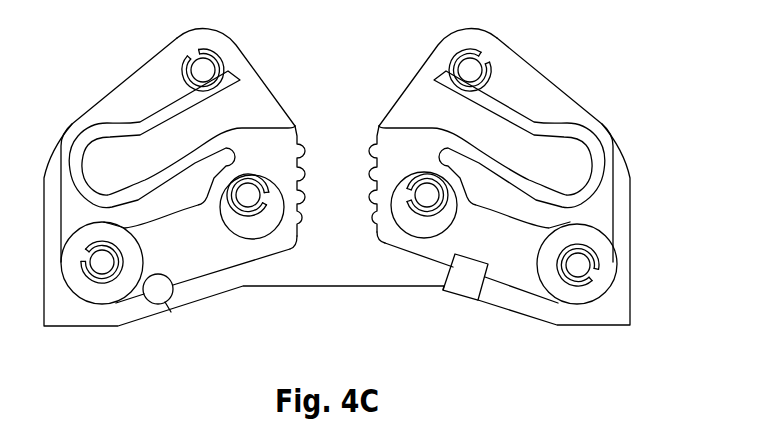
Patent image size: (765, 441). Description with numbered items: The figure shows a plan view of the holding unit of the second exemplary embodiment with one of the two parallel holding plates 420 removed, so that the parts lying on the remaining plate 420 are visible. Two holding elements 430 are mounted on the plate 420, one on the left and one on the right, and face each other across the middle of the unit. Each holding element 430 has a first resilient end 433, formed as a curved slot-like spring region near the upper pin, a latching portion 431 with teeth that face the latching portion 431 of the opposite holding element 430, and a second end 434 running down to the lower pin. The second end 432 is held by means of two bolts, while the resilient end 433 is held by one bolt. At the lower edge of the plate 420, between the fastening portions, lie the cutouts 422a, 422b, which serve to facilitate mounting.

The plate 420 is at (522, 80).
The holding element 430 is at (217, 189).
The latching portion 431 is at (311, 155).
The second end 432 is at (250, 228).
The first resilient end 433 is at (153, 118).
The second end 434 is at (175, 263).
The cutout 422a is at (461, 290).
The cutout 422b is at (156, 292).